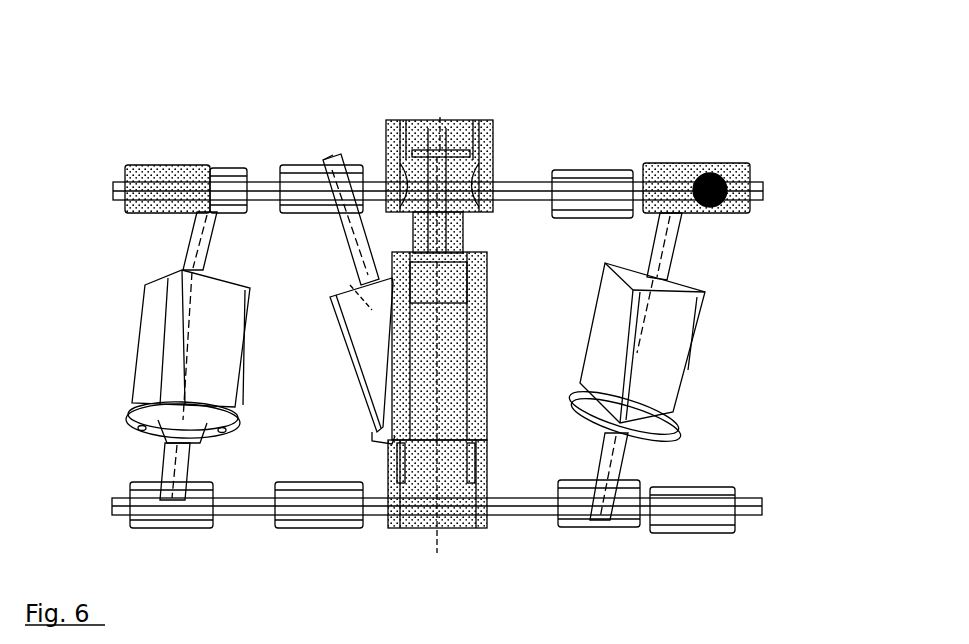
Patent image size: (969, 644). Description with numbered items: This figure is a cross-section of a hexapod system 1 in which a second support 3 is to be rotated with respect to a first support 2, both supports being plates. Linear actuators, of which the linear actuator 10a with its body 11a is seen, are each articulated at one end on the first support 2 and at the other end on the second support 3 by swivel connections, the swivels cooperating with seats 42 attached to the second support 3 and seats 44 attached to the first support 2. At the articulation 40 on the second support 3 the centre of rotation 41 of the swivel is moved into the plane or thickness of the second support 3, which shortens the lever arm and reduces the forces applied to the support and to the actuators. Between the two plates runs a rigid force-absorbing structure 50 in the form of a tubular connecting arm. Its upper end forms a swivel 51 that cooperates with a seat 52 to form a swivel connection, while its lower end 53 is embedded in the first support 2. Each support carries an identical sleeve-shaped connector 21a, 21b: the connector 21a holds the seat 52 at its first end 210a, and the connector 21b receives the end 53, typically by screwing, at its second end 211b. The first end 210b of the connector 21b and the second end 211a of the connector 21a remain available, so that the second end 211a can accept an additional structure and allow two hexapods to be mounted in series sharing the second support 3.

The device 1 is at (613, 63).
The first support 2 is at (760, 514).
The second support 3 is at (765, 196).
The linear actuator 10a is at (696, 366).
The motor 11a is at (662, 372).
The connector 21a is at (456, 137).
The connector 21b is at (441, 506).
The fastening unit 40 is at (773, 162).
The centre of rotation 41 is at (716, 165).
The seat 42 is at (172, 165).
The seat 44 is at (163, 530).
The force-absorbing structure 50 is at (503, 337).
The swivel 51 is at (493, 128).
The seat 52 is at (493, 153).
The end of the connecting arm 53 is at (540, 434).
The first end 210a is at (472, 212).
The first end 210b is at (447, 530).
The second end 211a is at (441, 118).
The second end 211b is at (395, 462).